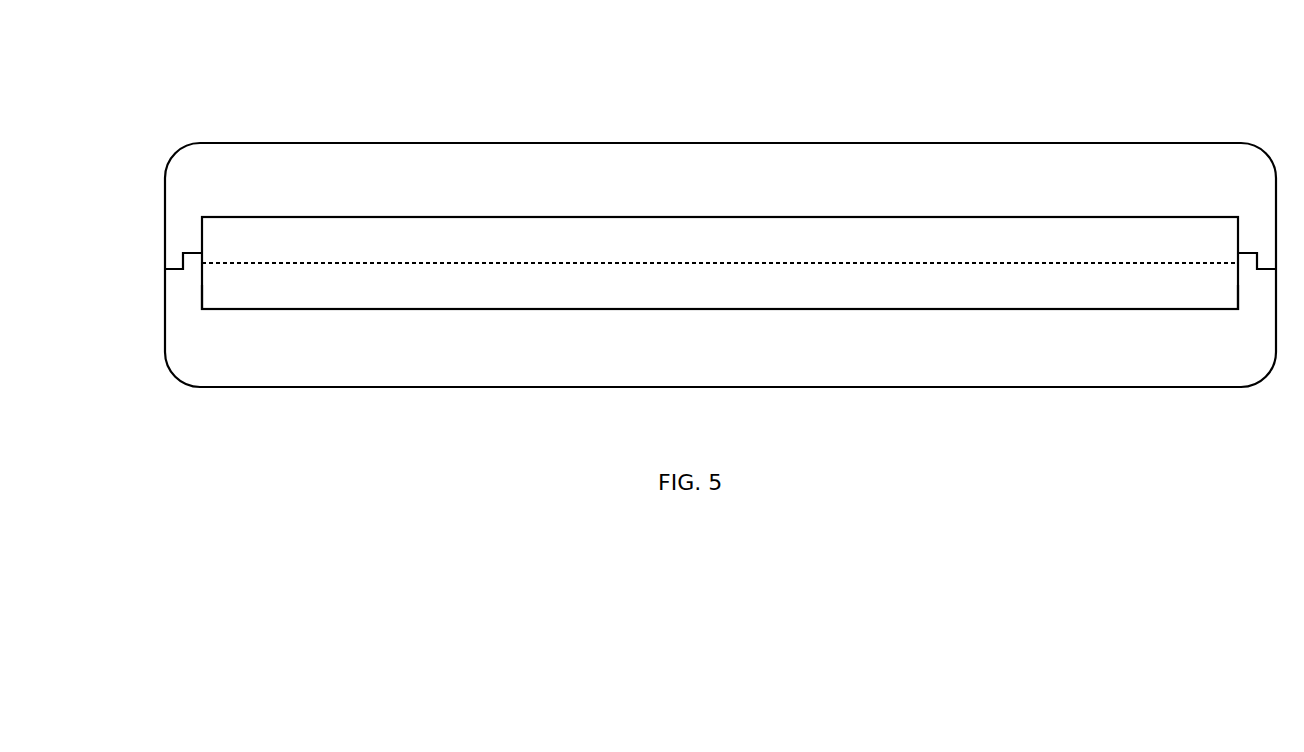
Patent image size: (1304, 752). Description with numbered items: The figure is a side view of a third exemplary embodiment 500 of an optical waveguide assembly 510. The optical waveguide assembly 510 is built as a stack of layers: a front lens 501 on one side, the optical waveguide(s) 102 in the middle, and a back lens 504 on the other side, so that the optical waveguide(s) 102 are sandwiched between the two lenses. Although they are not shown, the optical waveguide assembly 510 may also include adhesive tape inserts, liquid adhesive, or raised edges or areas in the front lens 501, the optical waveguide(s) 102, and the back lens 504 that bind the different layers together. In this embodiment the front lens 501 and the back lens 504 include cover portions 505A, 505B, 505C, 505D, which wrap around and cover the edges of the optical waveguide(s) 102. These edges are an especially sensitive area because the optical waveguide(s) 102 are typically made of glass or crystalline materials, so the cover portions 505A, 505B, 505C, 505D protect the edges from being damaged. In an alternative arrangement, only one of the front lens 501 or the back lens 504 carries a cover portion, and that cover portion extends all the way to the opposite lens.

The third exemplary embodiment 500 is at (645, 56).
The optical waveguide assembly 510 is at (120, 170).
The back lens 504 is at (458, 193).
The front lens 501 is at (458, 362).
The optical waveguide(s) 102 is at (877, 230).
The cover portion 505A is at (183, 222).
The cover portion 505B is at (1255, 221).
The cover portion 505C is at (1255, 305).
The cover portion 505D is at (183, 305).